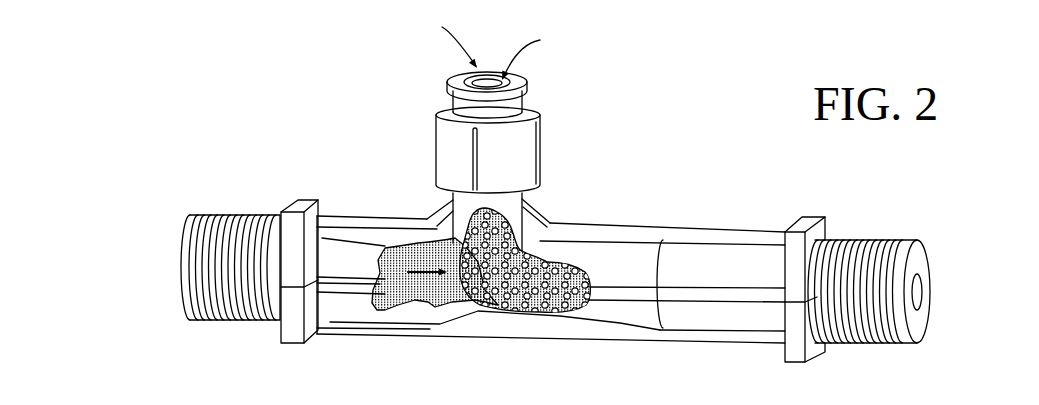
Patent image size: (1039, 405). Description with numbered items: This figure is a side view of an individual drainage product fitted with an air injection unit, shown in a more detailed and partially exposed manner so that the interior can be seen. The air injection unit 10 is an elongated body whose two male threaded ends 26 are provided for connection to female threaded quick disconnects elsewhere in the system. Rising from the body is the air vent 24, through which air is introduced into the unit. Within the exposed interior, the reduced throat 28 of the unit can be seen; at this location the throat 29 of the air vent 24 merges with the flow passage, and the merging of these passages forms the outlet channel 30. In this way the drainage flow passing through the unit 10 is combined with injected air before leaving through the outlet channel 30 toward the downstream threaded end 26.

The air injection unit 10 is at (557, 330).
The air vent 24 is at (448, 80).
The male threaded ends 26 is at (903, 240).
The reduced throat 28 is at (463, 310).
The throat 29 is at (547, 247).
The outlet channel 30 is at (548, 262).